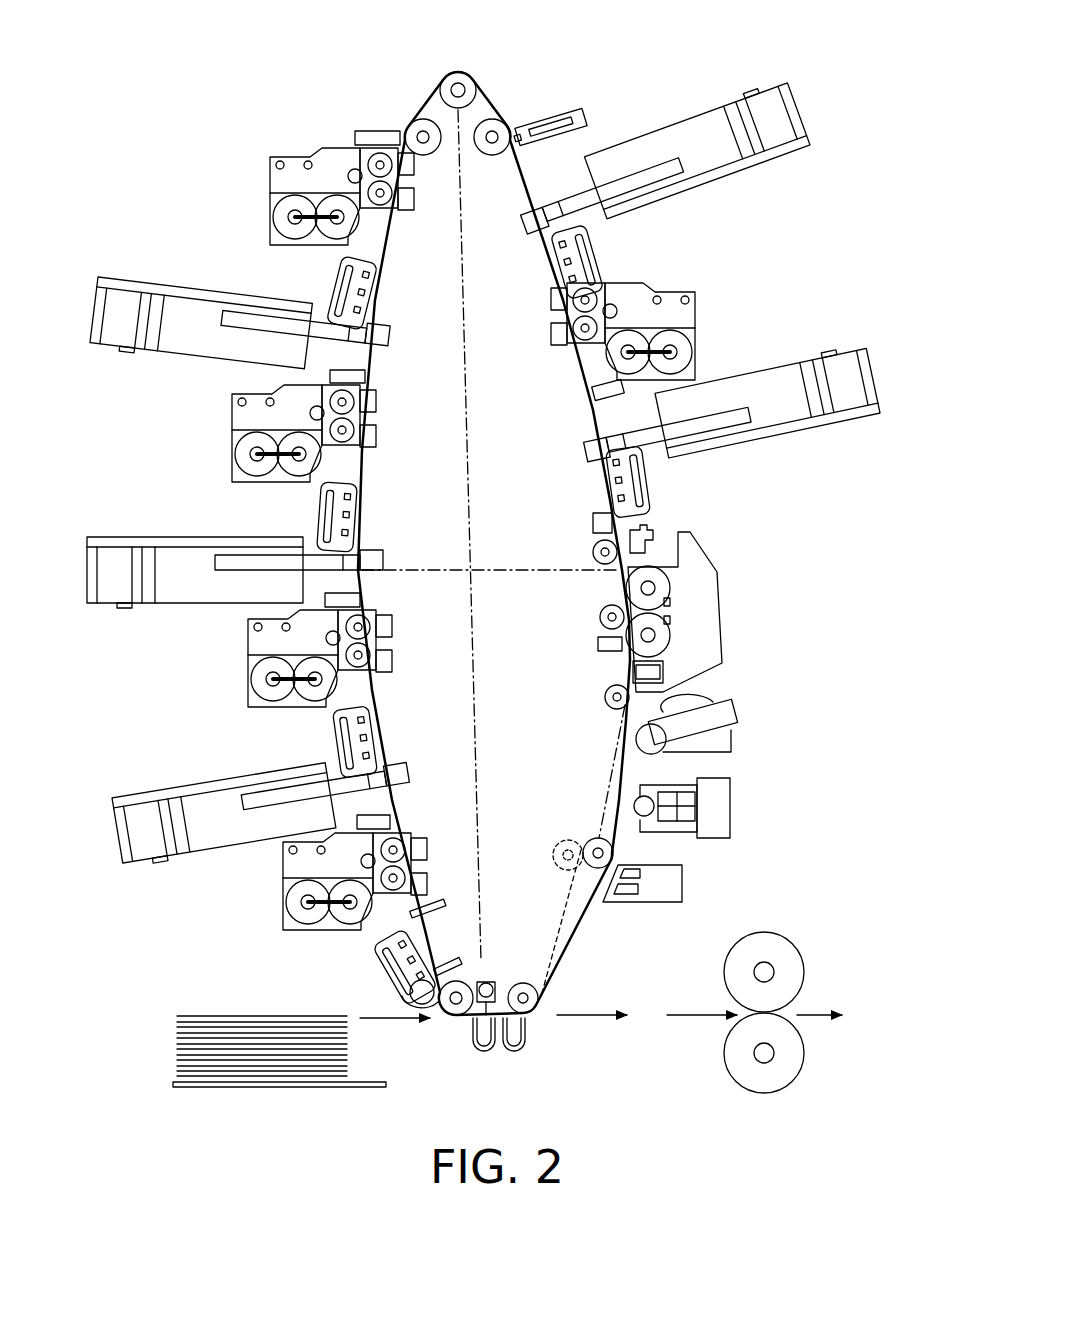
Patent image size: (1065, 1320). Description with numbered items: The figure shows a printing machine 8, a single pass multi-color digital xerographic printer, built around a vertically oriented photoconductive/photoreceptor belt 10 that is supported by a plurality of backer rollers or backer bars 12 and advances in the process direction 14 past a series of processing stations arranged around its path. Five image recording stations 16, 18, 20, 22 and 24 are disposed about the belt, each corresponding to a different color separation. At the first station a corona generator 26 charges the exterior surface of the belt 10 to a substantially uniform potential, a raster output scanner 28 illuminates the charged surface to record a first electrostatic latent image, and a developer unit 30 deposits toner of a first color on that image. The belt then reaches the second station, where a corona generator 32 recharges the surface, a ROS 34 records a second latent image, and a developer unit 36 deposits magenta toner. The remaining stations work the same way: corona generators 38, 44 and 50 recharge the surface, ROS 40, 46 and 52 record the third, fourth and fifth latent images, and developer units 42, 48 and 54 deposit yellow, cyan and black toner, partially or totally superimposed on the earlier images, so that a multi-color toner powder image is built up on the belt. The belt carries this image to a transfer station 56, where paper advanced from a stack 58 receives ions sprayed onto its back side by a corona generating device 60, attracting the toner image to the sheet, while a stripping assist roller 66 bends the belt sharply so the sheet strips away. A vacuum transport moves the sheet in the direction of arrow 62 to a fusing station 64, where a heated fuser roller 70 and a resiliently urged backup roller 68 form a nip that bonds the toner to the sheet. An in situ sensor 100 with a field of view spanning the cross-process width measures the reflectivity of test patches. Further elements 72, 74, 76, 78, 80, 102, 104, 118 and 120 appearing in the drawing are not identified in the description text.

The printing machine 8 is at (308, 62).
The photoconductive/photoreceptor belt 10 is at (576, 936).
The backer rollers or backer bars 12 is at (410, 180).
The process direction 14 is at (404, 632).
The image recording station 16 is at (728, 384).
The image recording station 18 is at (674, 138).
The image recording station 20 is at (240, 296).
The image recording station 22 is at (235, 565).
The image recording station 24 is at (264, 810).
The corona generator 26 is at (650, 482).
The raster output scanner 28 is at (815, 420).
The developer unit 30 is at (695, 322).
The corona generator 32 is at (598, 258).
The raster output scanner 34 is at (795, 140).
The developer unit 36 is at (305, 160).
The corona generator 38 is at (338, 272).
The raster output scanner 40 is at (108, 350).
The developer unit 42 is at (232, 414).
The corona generator 44 is at (317, 512).
The raster output scanner 46 is at (104, 598).
The developer unit 48 is at (250, 654).
The corona generator 50 is at (337, 735).
The raster output scanner 52 is at (203, 850).
The developer unit 54 is at (285, 905).
The transfer station 56 is at (448, 1018).
The stack 58 is at (290, 1068).
The corona generating device 60 is at (488, 1053).
The arrow 62 is at (592, 1018).
The fusing station 64 is at (779, 982).
The stripping assist roller 66 is at (523, 984).
The backup roller 68 is at (795, 1070).
The heated fuser roller 70 is at (790, 957).
The belt cleaner 72 is at (740, 577).
The tension roller 74 is at (592, 843).
The drive roller 76 is at (469, 81).
The belt roller 78 is at (605, 700).
The sensor 80 is at (646, 531).
The in situ sensor 100 is at (700, 712).
The sensor module 102 is at (732, 808).
The guide module 104 is at (682, 880).
The horizontal axis 118 is at (546, 568).
The vertical axis 120 is at (477, 318).